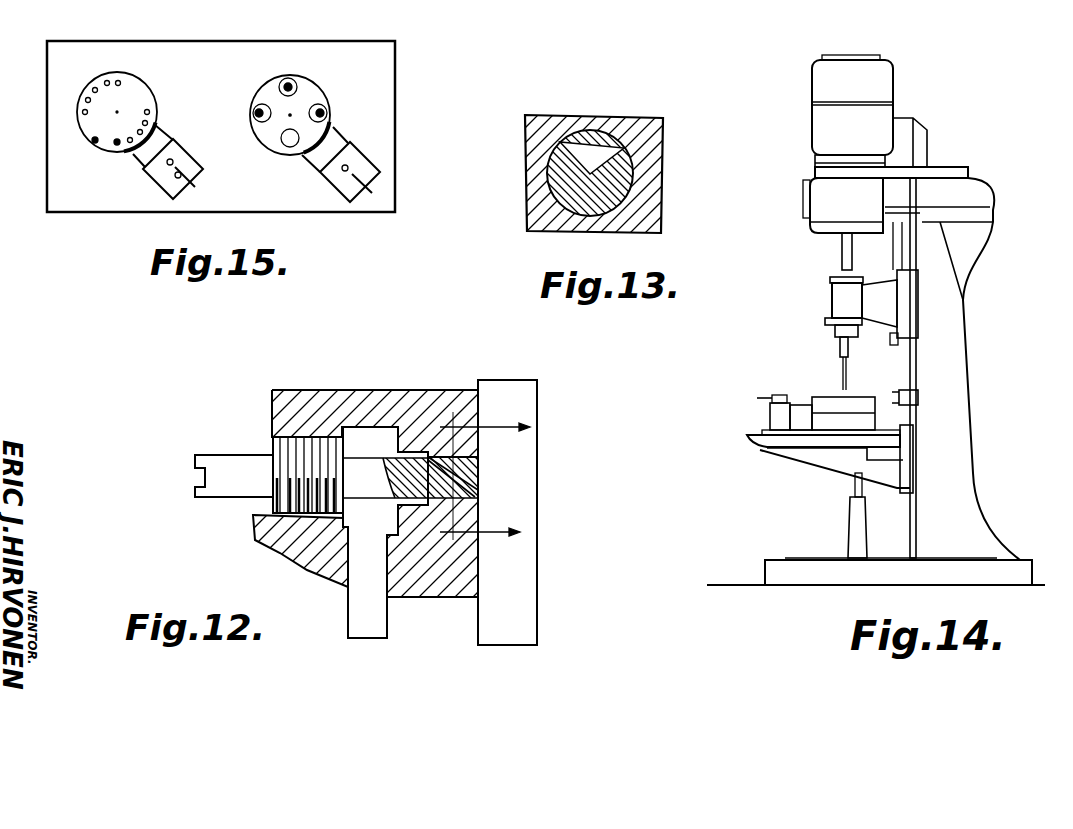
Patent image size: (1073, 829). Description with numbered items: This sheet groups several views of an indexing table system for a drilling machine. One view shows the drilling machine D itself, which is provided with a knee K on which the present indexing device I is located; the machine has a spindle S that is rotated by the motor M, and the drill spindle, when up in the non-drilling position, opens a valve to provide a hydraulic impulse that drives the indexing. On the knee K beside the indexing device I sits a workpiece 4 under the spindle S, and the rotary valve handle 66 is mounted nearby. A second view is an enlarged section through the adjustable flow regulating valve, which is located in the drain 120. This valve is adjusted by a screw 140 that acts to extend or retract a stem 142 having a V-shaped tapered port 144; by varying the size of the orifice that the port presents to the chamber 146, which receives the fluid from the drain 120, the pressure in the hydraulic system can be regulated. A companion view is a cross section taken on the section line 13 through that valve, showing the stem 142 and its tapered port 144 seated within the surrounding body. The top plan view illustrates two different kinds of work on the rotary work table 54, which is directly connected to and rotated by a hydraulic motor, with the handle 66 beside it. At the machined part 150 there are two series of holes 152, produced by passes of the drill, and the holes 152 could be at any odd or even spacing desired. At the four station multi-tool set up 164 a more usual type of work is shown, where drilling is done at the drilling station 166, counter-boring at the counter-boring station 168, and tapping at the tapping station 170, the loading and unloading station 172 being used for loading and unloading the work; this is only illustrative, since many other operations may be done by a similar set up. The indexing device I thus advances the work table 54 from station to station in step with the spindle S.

In FIG. 15, the machined part 150 is at (88, 134).
In FIG. 15, the holes 152 is at (105, 82).
In FIG. 15, the work table 54 is at (145, 95).
In FIG. 15, the handle 66 is at (195, 187).
In FIG. 14, the handle 66 is at (770, 397).
In FIG. 15, the counter-boring station 168 is at (290, 78).
In FIG. 15, the four station multi-tool set up 164 is at (313, 92).
In FIG. 15, the drilling station 166 is at (253, 112).
In FIG. 15, the tapping station 170 is at (327, 113).
In FIG. 15, the loading and unloading station 172 is at (290, 147).
In FIG. 15, the indexing device I is at (92, 143).
In FIG. 14, the indexing device I is at (825, 402).
In FIG. 12, the screw 140 is at (283, 500).
In FIG. 12, the stem 142 is at (363, 462).
In FIG. 13, the V-shaped tapered port 144 is at (602, 152).
In FIG. 12, the V-shaped tapered port 144 is at (465, 472).
In FIG. 12, the chamber 146 is at (295, 557).
In FIG. 12, the drain 120 is at (362, 612).
In FIG. 12, the section line 13- 13 is at (485, 482).
In FIG. 14, the motor M is at (817, 120).
In FIG. 14, the drilling machine D is at (952, 327).
In FIG. 14, the spindle S is at (837, 355).
In FIG. 14, the knee K is at (827, 460).
In FIG. 14, the workpiece 4 is at (860, 402).